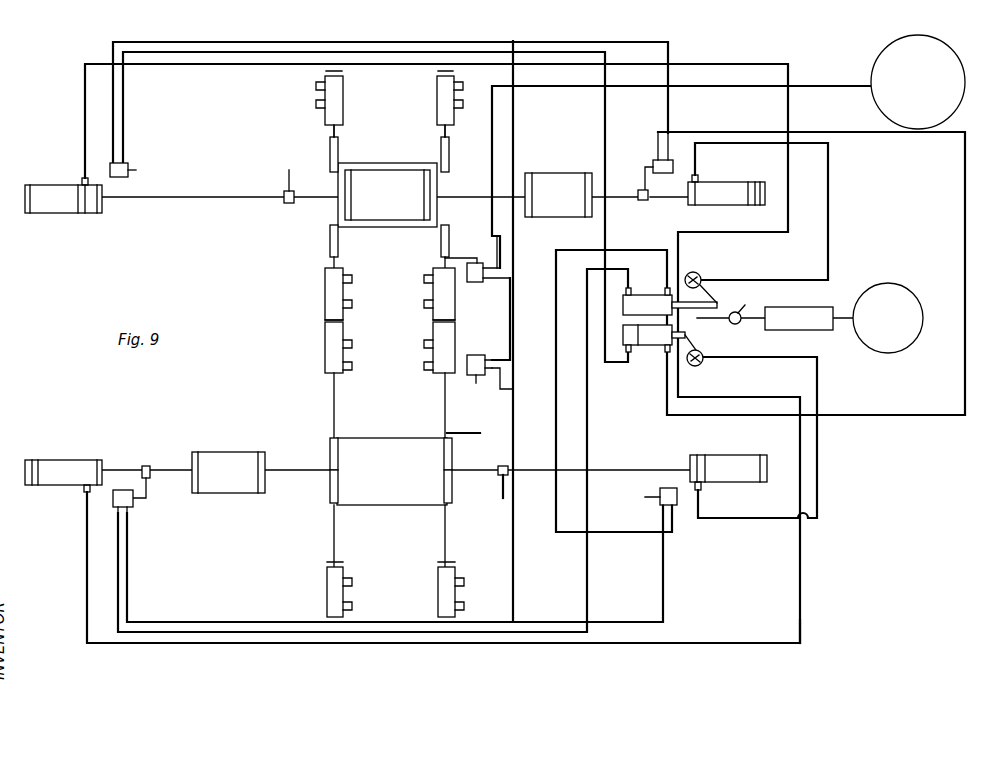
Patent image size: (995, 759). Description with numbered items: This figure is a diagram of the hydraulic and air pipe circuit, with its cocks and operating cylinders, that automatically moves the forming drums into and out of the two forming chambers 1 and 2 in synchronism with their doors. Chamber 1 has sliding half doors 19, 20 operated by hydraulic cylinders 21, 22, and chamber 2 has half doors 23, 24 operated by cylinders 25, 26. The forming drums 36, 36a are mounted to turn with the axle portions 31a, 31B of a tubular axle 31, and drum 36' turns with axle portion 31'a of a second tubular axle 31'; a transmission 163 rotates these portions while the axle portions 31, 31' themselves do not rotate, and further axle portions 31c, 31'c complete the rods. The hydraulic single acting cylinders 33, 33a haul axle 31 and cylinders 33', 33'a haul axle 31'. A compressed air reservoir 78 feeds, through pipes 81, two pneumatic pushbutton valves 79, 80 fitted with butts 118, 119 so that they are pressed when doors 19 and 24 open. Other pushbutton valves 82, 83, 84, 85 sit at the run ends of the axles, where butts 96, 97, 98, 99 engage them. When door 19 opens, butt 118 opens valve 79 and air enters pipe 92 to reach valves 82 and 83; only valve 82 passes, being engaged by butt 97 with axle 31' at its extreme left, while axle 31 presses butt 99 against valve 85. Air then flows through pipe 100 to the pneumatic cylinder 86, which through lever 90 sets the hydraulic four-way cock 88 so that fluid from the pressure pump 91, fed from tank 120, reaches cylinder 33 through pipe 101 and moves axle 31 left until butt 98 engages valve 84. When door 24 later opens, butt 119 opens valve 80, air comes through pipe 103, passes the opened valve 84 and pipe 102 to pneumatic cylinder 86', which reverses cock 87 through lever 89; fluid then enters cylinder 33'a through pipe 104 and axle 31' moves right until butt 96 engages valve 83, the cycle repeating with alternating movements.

The forming chamber 1 is at (412, 165).
The forming chamber 2 is at (382, 462).
The sliding half door 19 is at (330, 247).
The sliding half door 20 is at (330, 150).
The hydraulic cylinder 21 is at (330, 304).
The hydraulic cylinder 22 is at (343, 99).
The sliding half door 23 is at (330, 498).
The sliding half door 24 is at (330, 453).
The hydraulic cylinder 25 is at (330, 352).
The hydraulic cylinder 26 is at (327, 596).
The tubular axle 31 is at (395, 190).
The tubular axle portion 31a is at (318, 199).
The tubular axle portion 31B is at (503, 197).
The push rod section 31c is at (620, 199).
The tubular axle 31' is at (396, 454).
The tubular axle portion 31'a is at (240, 447).
The push rod section 31'c is at (481, 458).
The hydraulic single acting cylinder 33 is at (63, 185).
The hydraulic single action cylinder 33a is at (720, 188).
The hydraulic single acting cylinder 33' is at (63, 489).
The hydraulic single action cylinder 33'a is at (728, 480).
The forming drum 36 is at (387, 173).
The forming drum 36a is at (550, 190).
The forming drum 36' is at (228, 456).
The compressed air reservoir 78 is at (892, 74).
The pneumatic pushbutton valve 79 is at (470, 262).
The pneumatic pushbutton valve 80 is at (474, 376).
The pipes 81 is at (736, 82).
The pneumatic pushbutton valve 82 is at (113, 500).
The pneumatic pushbutton valve 83 is at (658, 497).
The pneumatic pushbutton valve 84 is at (122, 172).
The pneumatic pushbutton valve 85 is at (660, 163).
The pneumatic cylinder 86 is at (670, 291).
The pneumatic cylinder 86' is at (654, 346).
The hydraulic four-way cock 87 is at (703, 356).
The hydraulic four-way cock 88 is at (700, 277).
The lever 89 is at (696, 342).
The lever 90 is at (716, 295).
The pressure pump 91 is at (800, 318).
The pipe 92 is at (160, 560).
The butt 96 is at (502, 498).
The butt 97 is at (150, 504).
The butt 98 is at (316, 179).
The butt 99 is at (638, 179).
The pipe 100 is at (620, 268).
The pipe 101 is at (293, 64).
The pipe 102 is at (280, 47).
The pipe 103 is at (378, 47).
The pipe 104 is at (770, 357).
The butt 118 is at (488, 252).
The butt 119 is at (476, 432).
The tank 120 is at (880, 338).
The transmission 163 is at (805, 564).